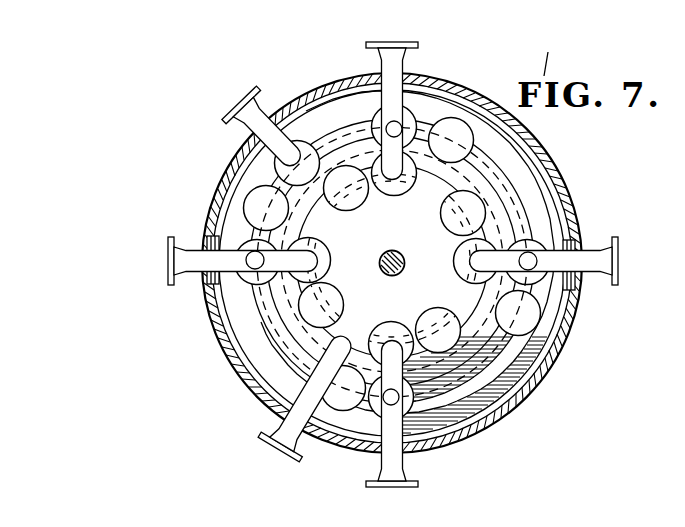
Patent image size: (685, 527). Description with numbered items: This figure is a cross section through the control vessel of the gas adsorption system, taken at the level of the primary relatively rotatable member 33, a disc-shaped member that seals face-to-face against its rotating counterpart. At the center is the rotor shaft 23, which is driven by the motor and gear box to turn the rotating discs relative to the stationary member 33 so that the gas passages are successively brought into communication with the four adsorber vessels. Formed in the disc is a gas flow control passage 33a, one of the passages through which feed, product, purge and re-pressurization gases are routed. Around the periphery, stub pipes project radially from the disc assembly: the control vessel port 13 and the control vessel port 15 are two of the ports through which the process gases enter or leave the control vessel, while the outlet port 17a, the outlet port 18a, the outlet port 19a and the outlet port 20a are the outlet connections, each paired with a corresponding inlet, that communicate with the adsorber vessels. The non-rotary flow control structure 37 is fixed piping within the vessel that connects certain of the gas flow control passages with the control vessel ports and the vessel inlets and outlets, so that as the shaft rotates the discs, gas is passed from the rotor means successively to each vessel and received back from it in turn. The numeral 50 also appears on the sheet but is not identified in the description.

The control vessel port 13 is at (245, 103).
The control vessel port 15 is at (262, 442).
The outlet port 17a is at (420, 47).
The outlet port 18a is at (618, 290).
The outlet port 19a is at (385, 488).
The outlet port 20a is at (170, 278).
The rotor shaft 23 is at (388, 277).
The primary relatively rotatable member 33 is at (552, 180).
The gas flow control passage 33a is at (300, 312).
The non-rotary flow control structure 37 is at (240, 238).
The unidentified 50 is at (572, 517).